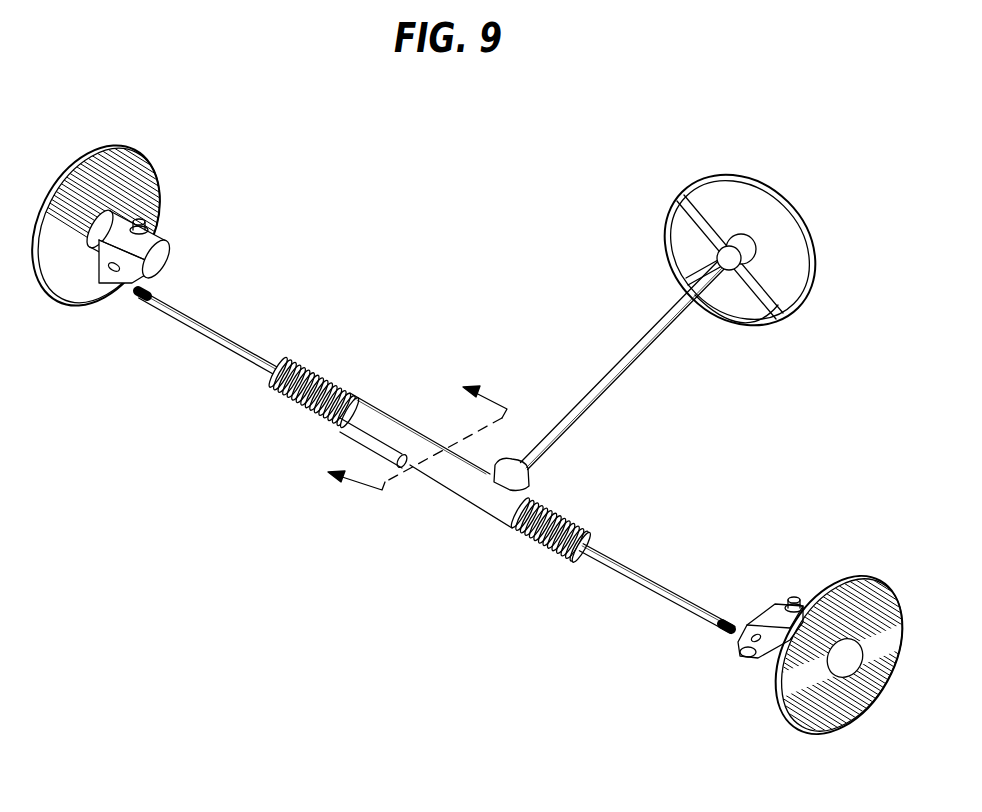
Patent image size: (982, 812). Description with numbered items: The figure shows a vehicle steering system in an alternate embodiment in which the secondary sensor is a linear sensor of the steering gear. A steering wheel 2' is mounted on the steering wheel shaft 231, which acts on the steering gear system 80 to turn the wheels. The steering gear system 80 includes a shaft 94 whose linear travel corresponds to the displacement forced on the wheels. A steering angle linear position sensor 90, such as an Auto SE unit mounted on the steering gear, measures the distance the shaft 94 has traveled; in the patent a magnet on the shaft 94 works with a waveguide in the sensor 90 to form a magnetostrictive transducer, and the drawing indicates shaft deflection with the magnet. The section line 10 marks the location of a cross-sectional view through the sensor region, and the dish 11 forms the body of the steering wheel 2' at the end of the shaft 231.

The steering wheel 2' is at (740, 269).
The section line 10- 10 is at (396, 425).
The steering wheel dish 11 is at (735, 307).
The steering gear system 80 is at (292, 408).
The steering angle linear position sensor 90 is at (353, 423).
The shaft 94 is at (230, 338).
The steering wheel shaft 231 is at (607, 372).